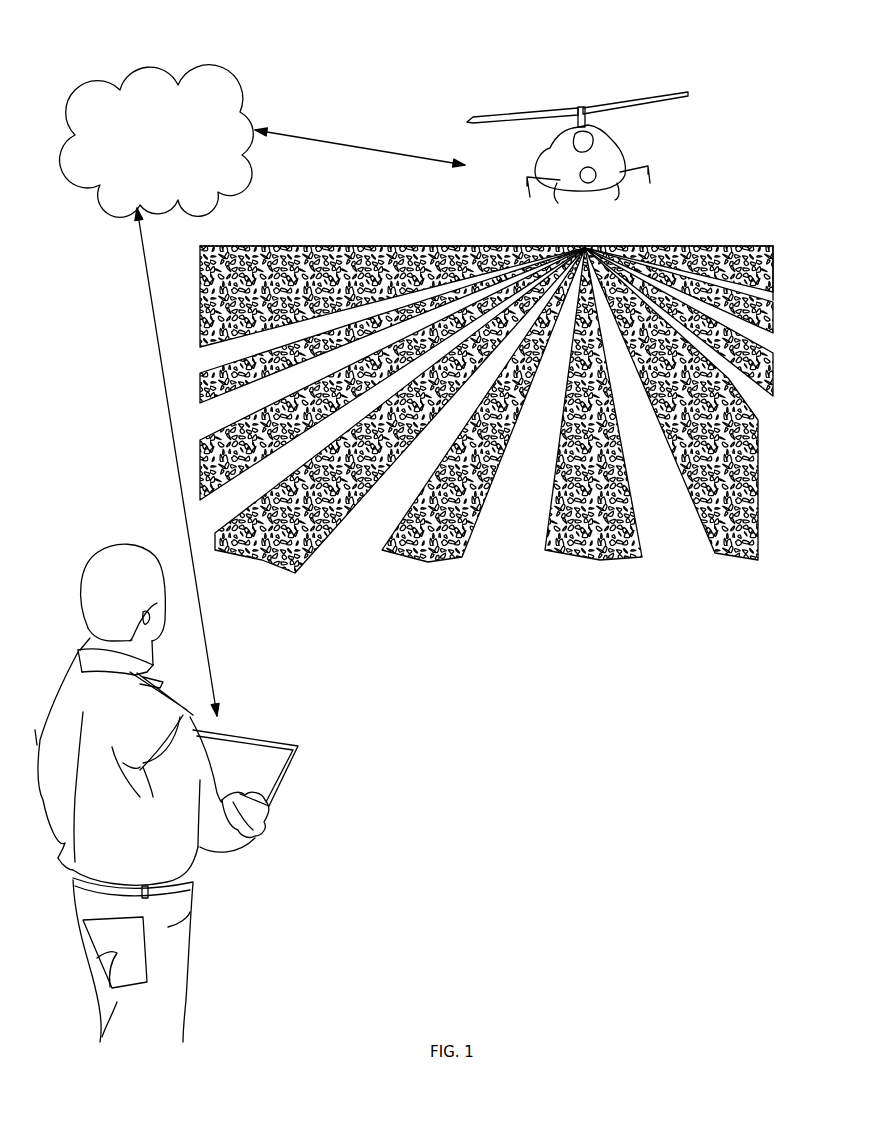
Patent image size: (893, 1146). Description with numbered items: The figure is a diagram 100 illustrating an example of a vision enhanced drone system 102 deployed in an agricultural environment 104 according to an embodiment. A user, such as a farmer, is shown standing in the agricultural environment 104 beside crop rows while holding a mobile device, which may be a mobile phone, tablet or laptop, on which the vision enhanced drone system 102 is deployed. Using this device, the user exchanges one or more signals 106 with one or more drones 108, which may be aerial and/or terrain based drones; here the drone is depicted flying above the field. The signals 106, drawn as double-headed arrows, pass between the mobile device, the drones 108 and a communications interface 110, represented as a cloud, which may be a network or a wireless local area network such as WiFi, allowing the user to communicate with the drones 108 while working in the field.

The diagram 100 is at (232, 42).
The vision enhanced drone system 102 is at (250, 737).
The agricultural environment 104 is at (435, 555).
The signals 106 is at (322, 142).
The drones 108 is at (583, 107).
The communications interface 110 is at (140, 172).